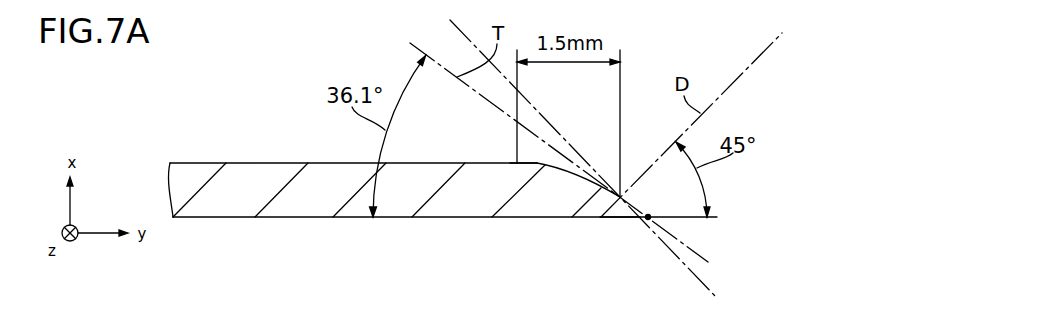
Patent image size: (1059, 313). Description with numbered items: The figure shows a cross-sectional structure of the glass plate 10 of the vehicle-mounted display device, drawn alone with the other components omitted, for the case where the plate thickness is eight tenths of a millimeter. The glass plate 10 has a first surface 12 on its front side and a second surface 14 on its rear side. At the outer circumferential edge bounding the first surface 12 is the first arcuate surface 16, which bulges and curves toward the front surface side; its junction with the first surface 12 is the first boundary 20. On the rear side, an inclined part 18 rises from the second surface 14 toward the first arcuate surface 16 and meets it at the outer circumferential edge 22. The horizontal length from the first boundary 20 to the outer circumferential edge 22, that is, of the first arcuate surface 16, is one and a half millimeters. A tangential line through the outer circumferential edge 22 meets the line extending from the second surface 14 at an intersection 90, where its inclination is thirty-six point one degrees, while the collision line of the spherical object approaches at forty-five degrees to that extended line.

The glass plate 10 is at (223, 202).
The first surface 12 is at (268, 163).
The second surface 14 is at (337, 217).
The first arcuate surface 16 is at (583, 175).
The inclined part 18 is at (619, 222).
The first boundary 20 is at (517, 163).
The outer circumferential edge 22 is at (625, 198).
The intersection 90 is at (648, 219).